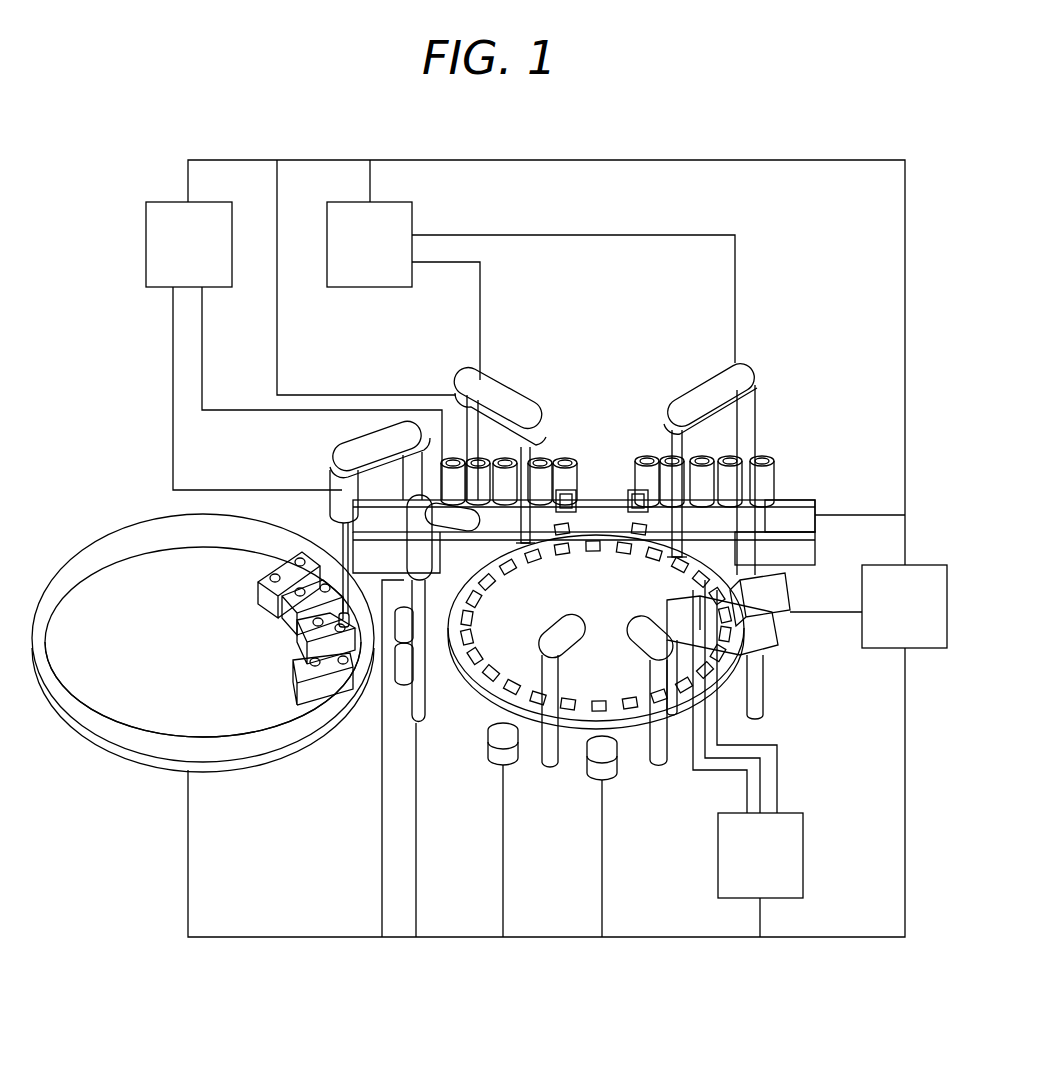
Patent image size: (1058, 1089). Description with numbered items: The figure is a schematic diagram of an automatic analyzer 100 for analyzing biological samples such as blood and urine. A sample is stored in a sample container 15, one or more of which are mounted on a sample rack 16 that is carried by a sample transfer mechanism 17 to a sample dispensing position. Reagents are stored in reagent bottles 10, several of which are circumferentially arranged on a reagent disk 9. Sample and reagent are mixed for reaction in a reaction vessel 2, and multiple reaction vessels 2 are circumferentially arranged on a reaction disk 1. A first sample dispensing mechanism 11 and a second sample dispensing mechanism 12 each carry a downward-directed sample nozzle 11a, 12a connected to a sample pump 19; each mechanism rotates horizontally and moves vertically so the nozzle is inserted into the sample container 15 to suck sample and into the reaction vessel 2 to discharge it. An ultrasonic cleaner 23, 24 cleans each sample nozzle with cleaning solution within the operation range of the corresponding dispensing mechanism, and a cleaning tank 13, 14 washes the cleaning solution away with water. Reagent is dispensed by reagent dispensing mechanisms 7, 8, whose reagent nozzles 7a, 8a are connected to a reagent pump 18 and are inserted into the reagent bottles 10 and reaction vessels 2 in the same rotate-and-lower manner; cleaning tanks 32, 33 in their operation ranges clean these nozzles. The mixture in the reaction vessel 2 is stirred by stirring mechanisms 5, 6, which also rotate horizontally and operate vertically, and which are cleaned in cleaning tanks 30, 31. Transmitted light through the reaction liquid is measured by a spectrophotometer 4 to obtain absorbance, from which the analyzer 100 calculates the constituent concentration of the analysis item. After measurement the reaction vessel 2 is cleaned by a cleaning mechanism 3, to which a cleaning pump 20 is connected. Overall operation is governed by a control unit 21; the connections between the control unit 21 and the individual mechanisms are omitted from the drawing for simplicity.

The automatic analyzer 100 is at (104, 164).
The reaction disk 1 is at (471, 690).
The reaction vessel 2 is at (467, 700).
The cleaning mechanism 3 is at (765, 645).
The spectrophotometer 4 is at (775, 588).
The stirring mechanism 5 is at (553, 768).
The stirring mechanism 6 is at (657, 766).
The reagent dispensing mechanism 7 is at (427, 573).
The reagent nozzle 7a is at (463, 583).
The reagent dispensing mechanism 8 is at (350, 439).
The reagent nozzle 8a is at (340, 540).
The reagent disk 9 is at (128, 760).
The reagent bottle 10 is at (295, 672).
The first sample dispensing mechanism 11 is at (500, 380).
The sample nozzle 11a is at (536, 458).
The second sample dispensing mechanism 12 is at (745, 365).
The sample nozzle 12a is at (672, 455).
The cleaning tank 13 is at (566, 530).
The cleaning tank 14 is at (640, 530).
The sample container 15 is at (785, 462).
The sample rack 16 is at (788, 515).
The sample transfer mechanism 17 is at (810, 552).
The reagent pump 18 is at (150, 240).
The sample pump 19 is at (366, 288).
The cleaning pump 20 is at (805, 857).
The control unit 21 is at (930, 565).
The ultrasonic cleaner 23 is at (566, 498).
The ultrasonic cleaner 24 is at (643, 498).
The cleaning tank 30 is at (505, 765).
The cleaning tank 31 is at (605, 780).
The cleaning tank 32 is at (404, 680).
The cleaning tank 33 is at (398, 633).